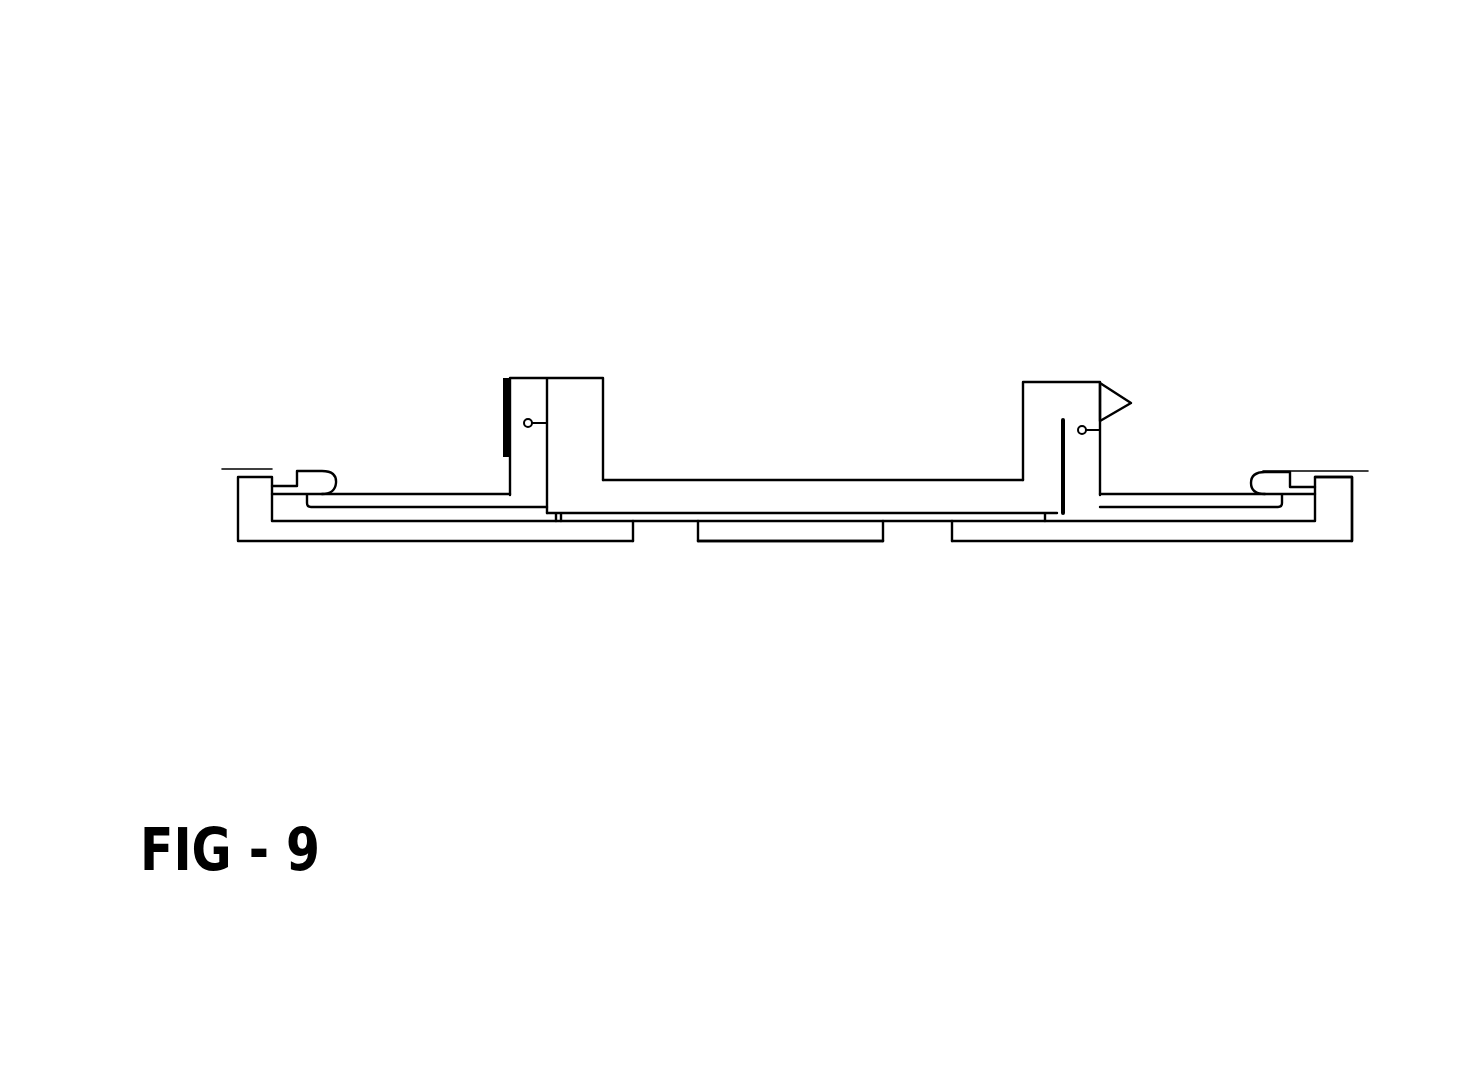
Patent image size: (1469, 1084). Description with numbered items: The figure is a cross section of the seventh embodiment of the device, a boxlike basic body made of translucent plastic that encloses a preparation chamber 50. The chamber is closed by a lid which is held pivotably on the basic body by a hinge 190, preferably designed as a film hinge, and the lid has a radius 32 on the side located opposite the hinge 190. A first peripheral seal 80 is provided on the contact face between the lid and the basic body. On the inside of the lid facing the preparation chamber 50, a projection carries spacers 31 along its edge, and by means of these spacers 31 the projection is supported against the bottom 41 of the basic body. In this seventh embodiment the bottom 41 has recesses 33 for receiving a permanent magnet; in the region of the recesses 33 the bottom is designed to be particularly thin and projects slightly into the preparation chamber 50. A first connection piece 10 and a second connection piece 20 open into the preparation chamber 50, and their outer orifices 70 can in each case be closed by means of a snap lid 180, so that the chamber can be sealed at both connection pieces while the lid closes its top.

The first connection piece 10 is at (1177, 503).
The second connection piece 20 is at (310, 533).
The spacers 31 is at (560, 517).
The radius 32 is at (1097, 495).
The recesses 33 is at (668, 531).
The bottom 41 is at (808, 535).
The preparation chamber 50 is at (982, 520).
The outer orifices 70 is at (1300, 548).
The first peripheral seal 80 is at (545, 420).
The snap lid 180 is at (247, 468).
The hinge 190 is at (524, 424).